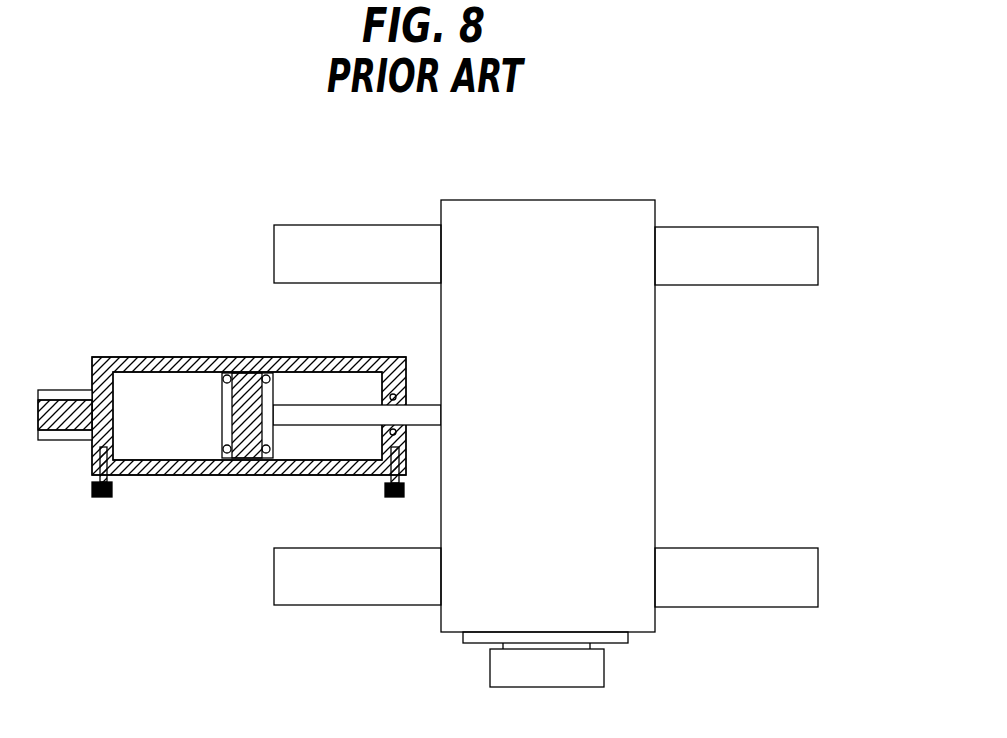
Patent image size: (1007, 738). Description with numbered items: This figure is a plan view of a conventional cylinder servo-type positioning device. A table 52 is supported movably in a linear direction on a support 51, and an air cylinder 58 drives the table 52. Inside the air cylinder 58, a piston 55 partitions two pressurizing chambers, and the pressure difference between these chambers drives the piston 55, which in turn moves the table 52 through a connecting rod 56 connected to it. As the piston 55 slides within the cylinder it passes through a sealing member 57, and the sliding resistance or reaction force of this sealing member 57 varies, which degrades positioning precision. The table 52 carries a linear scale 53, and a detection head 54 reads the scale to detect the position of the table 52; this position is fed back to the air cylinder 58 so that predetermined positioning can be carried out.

The support 51 is at (752, 235).
The table 52 is at (575, 210).
The linear scale 53 is at (628, 634).
The detection head 54 is at (593, 670).
The piston 55 is at (228, 410).
The connecting rod 56 is at (345, 417).
The sealing member 57 is at (262, 373).
The air cylinder 58 is at (96, 346).